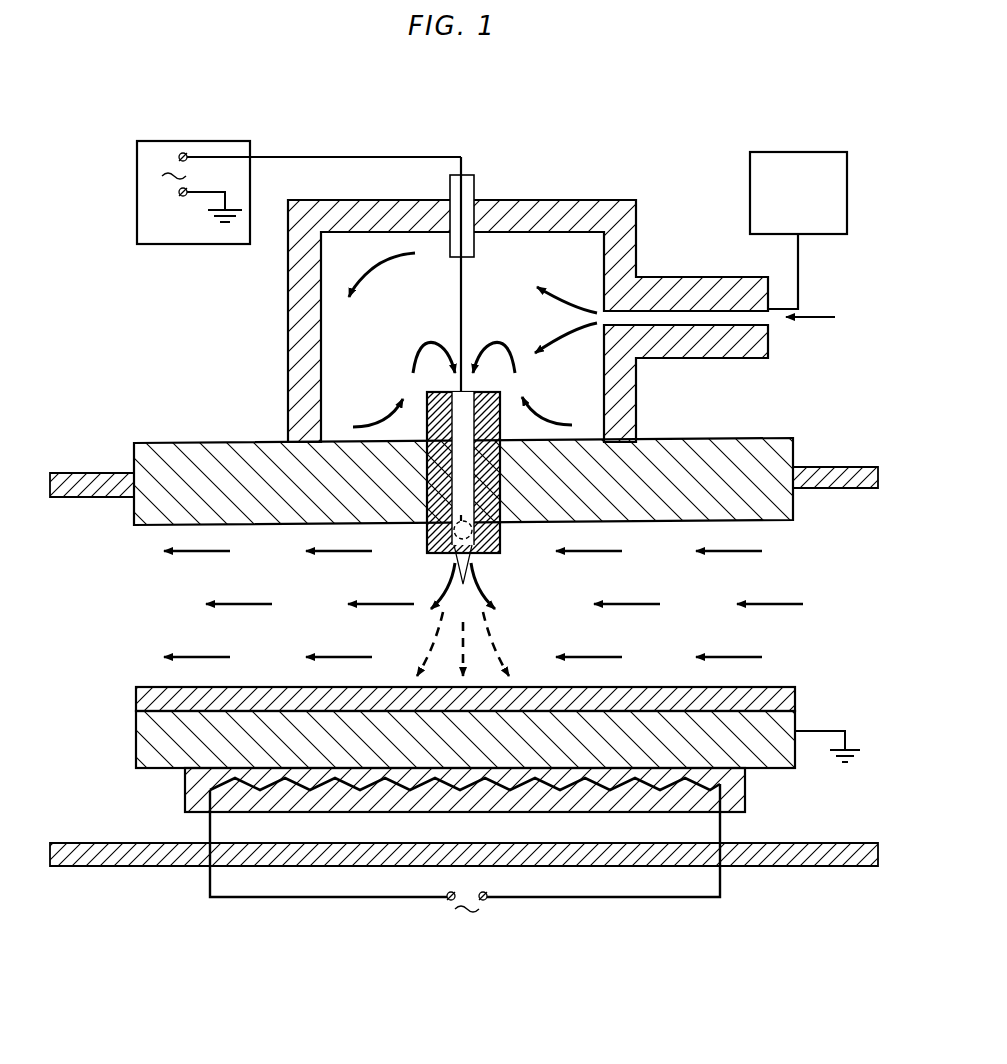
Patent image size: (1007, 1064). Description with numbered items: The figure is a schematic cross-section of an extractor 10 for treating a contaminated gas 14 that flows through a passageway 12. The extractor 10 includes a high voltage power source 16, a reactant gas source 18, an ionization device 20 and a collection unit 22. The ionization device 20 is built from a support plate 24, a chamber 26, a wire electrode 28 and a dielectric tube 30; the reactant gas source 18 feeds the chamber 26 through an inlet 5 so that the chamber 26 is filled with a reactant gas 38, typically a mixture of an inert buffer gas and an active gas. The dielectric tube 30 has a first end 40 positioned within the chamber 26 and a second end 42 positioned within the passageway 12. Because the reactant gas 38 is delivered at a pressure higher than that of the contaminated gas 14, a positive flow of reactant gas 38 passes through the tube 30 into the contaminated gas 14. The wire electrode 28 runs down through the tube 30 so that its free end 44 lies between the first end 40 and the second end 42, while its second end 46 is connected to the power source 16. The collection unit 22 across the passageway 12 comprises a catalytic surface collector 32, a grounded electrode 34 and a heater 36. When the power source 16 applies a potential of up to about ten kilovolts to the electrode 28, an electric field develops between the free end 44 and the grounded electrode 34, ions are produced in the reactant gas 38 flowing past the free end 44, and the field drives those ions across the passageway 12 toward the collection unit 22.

The gas inlet passage 5 is at (678, 277).
The extractor 10 is at (677, 111).
The passageway 12 is at (827, 467).
The contaminated gas 14 is at (766, 628).
The high voltage power source 16 is at (137, 210).
The reactant gas source 18 is at (800, 152).
The ionization device 20 is at (696, 441).
The collection unit 22 is at (463, 722).
The support plate 24 is at (769, 455).
The chamber 26 is at (604, 253).
The wire electrode 28 is at (462, 290).
The dielectric tube 30 is at (426, 400).
The catalytic surface collector 32 is at (136, 700).
The grounded electrode 34 is at (136, 734).
The heater 36 is at (748, 786).
The reactant gas 38 is at (344, 274).
The first end 40 is at (497, 386).
The second end 42 is at (439, 556).
The free end 44 is at (497, 536).
The second end 46 is at (258, 157).